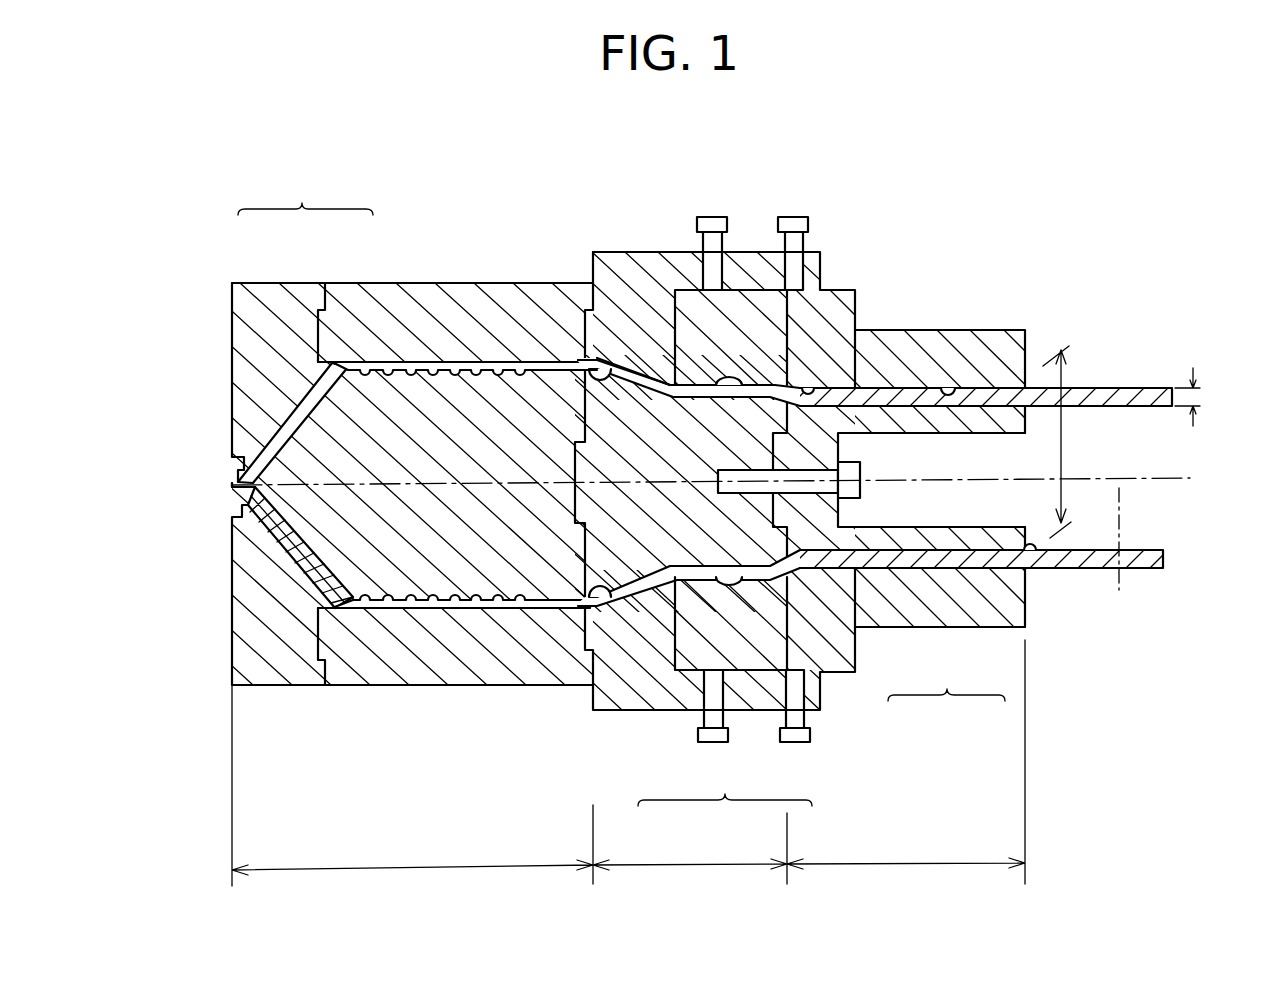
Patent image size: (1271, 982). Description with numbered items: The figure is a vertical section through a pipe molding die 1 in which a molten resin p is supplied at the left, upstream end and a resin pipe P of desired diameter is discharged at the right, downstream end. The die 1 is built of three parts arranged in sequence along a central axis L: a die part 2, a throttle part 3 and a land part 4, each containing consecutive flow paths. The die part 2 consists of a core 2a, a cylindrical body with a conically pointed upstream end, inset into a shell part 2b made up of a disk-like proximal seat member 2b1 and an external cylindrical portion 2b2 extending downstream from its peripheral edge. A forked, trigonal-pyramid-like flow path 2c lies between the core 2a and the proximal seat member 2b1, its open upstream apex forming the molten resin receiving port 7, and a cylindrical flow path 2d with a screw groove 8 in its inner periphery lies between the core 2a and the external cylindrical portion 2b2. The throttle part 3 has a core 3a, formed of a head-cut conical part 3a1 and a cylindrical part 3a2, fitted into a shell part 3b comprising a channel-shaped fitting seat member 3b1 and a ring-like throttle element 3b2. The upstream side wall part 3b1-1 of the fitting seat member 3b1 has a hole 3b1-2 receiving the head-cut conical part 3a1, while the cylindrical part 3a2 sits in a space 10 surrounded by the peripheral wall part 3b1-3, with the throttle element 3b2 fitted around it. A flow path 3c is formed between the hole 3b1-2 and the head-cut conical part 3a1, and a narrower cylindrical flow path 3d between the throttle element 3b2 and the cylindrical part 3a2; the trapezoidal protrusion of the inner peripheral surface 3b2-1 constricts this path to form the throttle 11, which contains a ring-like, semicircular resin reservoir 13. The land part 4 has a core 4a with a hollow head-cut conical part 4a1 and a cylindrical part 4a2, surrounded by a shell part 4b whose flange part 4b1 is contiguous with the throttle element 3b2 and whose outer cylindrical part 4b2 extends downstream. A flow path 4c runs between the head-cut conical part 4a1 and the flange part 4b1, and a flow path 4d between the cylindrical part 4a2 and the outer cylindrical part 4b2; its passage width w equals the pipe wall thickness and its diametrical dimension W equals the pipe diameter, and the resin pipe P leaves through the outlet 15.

The pipe molding die 1 is at (959, 191).
The die part 2 is at (412, 785).
The core 2a is at (393, 582).
The shell part 2b is at (305, 428).
The proximal seat member 2b1 is at (265, 283).
The external cylindrical portion 2b2 is at (347, 283).
The flow path 2c is at (268, 437).
The flow path 2d is at (378, 362).
The throttle part 3 is at (690, 848).
The core 3a is at (795, 520).
The head-cut conical part 3a1 is at (625, 572).
The cylindrical part 3a2 is at (790, 443).
The shell part 3b is at (724, 549).
The fitting seat member 3b1 is at (673, 712).
The side wall part 3b1-1 is at (668, 365).
The hole 3b1-2 is at (583, 355).
The peripheral wall part 3b1-3 is at (735, 300).
The throttle element 3b2 is at (777, 323).
The inner peripheral surface 3b2-1 is at (612, 660).
The flow path 3c is at (610, 358).
The flow path 3d is at (626, 372).
The land part 4 is at (906, 762).
The core 4a is at (937, 533).
The head-cut conical part 4a1 is at (825, 572).
The cylindrical part 4a2 is at (1010, 533).
The shell part 4b is at (925, 536).
The flange part 4b1 is at (862, 640).
The outer cylindrical part 4b2 is at (958, 612).
The flow path 4c is at (808, 386).
The flow path 4d is at (955, 386).
The molten resin receiving port 7 is at (232, 500).
The screw groove 8 is at (432, 370).
The space 10 is at (714, 340).
The throttle 11 is at (648, 690).
The resin reservoir 13 is at (730, 378).
The outlet 15 is at (1033, 565).
The resin pipe P is at (1086, 387).
The molten resin p is at (195, 490).
The diametrical dimension W is at (1067, 442).
The width dimension w is at (1196, 394).
The central axis L is at (1121, 558).